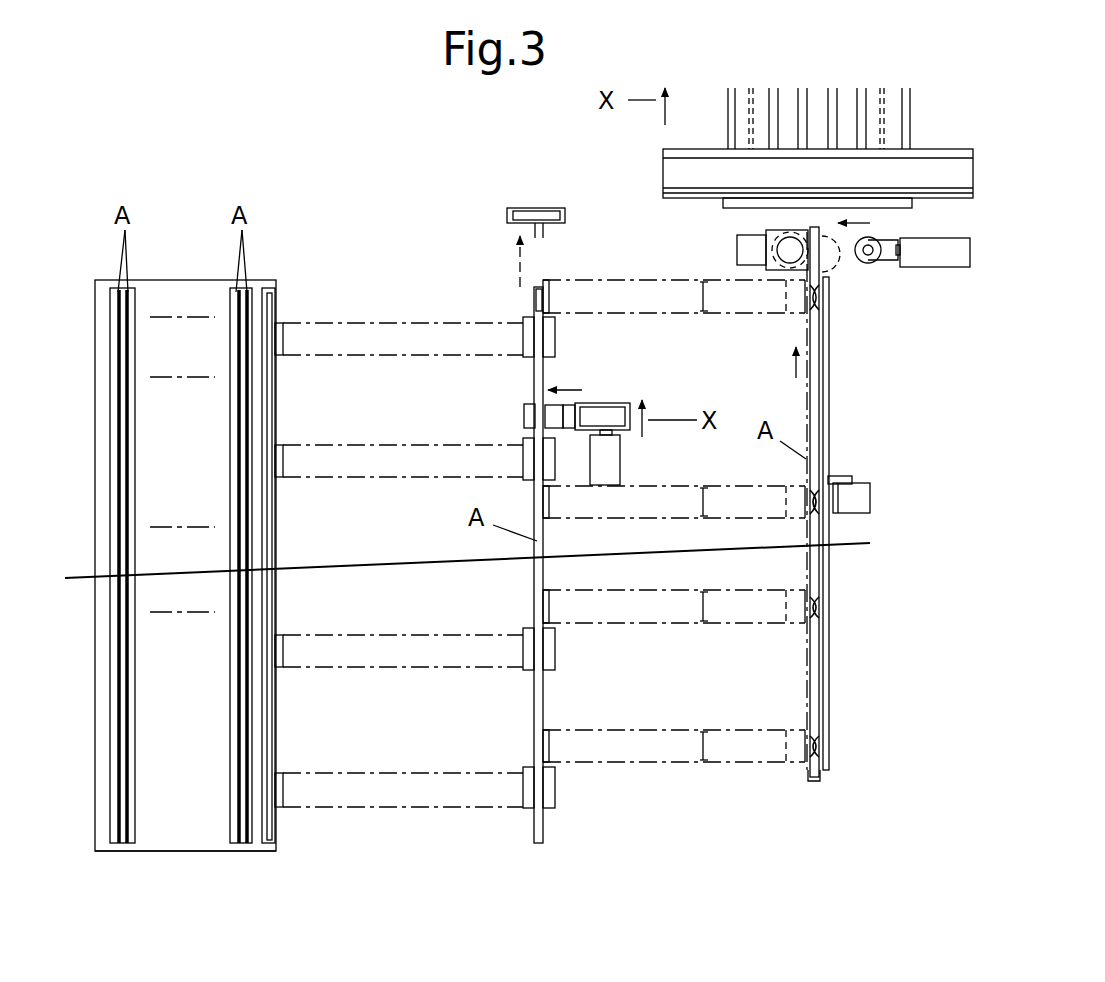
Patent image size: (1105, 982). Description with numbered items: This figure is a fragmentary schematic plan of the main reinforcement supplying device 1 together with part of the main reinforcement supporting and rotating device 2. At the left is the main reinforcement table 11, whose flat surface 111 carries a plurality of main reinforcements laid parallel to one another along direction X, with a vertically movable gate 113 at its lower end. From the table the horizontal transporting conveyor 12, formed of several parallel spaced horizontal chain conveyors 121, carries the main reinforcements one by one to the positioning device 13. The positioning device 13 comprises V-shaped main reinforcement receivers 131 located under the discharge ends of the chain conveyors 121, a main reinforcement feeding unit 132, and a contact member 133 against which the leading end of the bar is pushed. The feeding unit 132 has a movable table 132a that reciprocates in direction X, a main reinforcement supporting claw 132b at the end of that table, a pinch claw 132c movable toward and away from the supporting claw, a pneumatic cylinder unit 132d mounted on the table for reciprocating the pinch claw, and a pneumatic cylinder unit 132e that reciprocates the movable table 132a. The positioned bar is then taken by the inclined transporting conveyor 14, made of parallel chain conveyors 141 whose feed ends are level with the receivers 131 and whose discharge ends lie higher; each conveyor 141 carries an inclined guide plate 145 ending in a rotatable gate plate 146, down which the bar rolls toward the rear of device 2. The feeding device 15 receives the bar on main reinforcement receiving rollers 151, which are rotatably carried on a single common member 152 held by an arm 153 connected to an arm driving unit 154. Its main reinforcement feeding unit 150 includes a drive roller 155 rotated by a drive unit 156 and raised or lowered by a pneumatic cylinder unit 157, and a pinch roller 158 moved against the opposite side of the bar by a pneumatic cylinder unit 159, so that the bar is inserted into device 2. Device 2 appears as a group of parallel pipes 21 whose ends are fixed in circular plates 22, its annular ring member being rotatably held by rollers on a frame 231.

The main reinforcement supplying device 1 is at (950, 460).
The main reinforcement supporting and rotating device 2 is at (975, 172).
The parallel pipes 21 is at (868, 113).
The circular plates 22 is at (912, 205).
The frame 231 is at (960, 150).
The main reinforcement table 11 is at (200, 279).
The flat surface 111 is at (203, 840).
The vertically movable gate 113 is at (272, 300).
The horizontal transporting conveyor 12 is at (437, 321).
The horizontal chain conveyors 121 is at (350, 347).
The positioning device 13 is at (521, 207).
The V-shaped main reinforcement receivers 131 is at (524, 463).
The main reinforcement feeding unit 132 is at (612, 402).
The movable table 132a is at (620, 433).
The main reinforcement supporting claw 132b is at (526, 416).
The pinch claw 132c is at (570, 404).
The drive body 132d is at (626, 406).
The pneumatic cylinder unit 132e is at (621, 466).
The contact member 133 is at (541, 216).
The inclined transporting conveyor 14 is at (612, 278).
The chain conveyors 141 is at (598, 286).
The inclined guide plate 145 is at (718, 284).
The rotatable gate plate 146 is at (787, 315).
The feeding device 15 is at (829, 410).
The main reinforcement feeding unit 150 is at (968, 266).
The main reinforcement receiving rollers 151 is at (822, 299).
The common member 152 is at (829, 760).
The arm 153 is at (842, 478).
The arm driving unit 154 is at (870, 498).
The drive roller 155 is at (750, 239).
The drive unit 156 is at (774, 272).
The pneumatic cylinder unit 157 is at (738, 256).
The pinch roller 158 is at (877, 262).
The pneumatic cylinder unit 159 is at (975, 256).